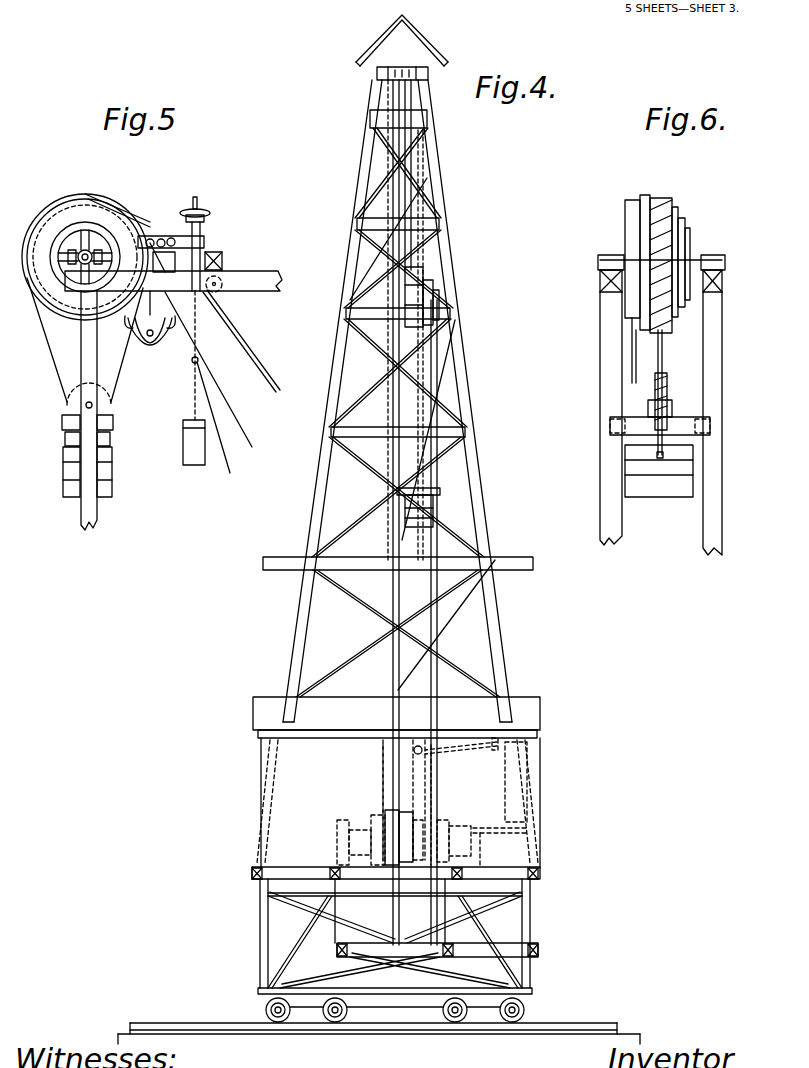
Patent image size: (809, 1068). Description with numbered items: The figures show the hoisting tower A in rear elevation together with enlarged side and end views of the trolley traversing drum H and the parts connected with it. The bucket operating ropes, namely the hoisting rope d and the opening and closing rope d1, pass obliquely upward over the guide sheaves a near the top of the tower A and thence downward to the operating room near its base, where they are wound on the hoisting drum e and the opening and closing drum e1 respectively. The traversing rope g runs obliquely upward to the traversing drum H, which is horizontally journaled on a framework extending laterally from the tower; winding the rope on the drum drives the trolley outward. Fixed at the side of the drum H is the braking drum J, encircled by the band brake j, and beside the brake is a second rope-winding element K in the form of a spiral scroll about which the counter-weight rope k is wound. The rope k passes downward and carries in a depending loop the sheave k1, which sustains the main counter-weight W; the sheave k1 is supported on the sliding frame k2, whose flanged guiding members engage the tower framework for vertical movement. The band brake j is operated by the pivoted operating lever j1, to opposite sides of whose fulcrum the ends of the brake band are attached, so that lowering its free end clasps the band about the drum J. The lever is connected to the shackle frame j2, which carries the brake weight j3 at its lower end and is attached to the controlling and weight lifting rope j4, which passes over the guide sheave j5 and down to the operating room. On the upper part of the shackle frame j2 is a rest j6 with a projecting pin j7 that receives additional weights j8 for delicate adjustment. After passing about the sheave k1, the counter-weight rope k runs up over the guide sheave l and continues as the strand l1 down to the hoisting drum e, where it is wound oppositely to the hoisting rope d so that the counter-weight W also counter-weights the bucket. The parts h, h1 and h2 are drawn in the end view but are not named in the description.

In FIG. 4, the guide sheaves a is at (388, 80).
In FIG. 4, the hoisting tower A is at (481, 470).
In FIG. 4, the trolley traversing drum H is at (397, 291).
In FIG. 6, the trolley traversing drum H is at (627, 211).
In FIG. 4, the counter-weight rope k is at (422, 417).
In FIG. 5, the counter-weight rope k is at (52, 366).
In FIG. 4, the main counter-weight W is at (433, 517).
In FIG. 5, the main counter-weight W is at (113, 473).
In FIG. 6, the main counter-weight W is at (653, 495).
In FIG. 4, the hoist-counter-weight rope strand l1 is at (432, 622).
In FIG. 5, the hoist-counter-weight rope strand l1 is at (233, 477).
In FIG. 4, the controlling and weight lifting rope j4 is at (455, 742).
In FIG. 5, the controlling and weight lifting rope j4 is at (204, 299).
In FIG. 4, the opening and closing rope d1 is at (382, 768).
In FIG. 4, the hoisting rope d is at (438, 780).
In FIG. 4, the opening and closing drum e1 is at (363, 822).
In FIG. 4, the hoisting drum e is at (446, 825).
In FIG. 5, the second rope-winding element K is at (55, 228).
In FIG. 6, the second rope-winding element K is at (680, 222).
In FIG. 5, the braking drum J is at (70, 196).
In FIG. 6, the braking drum J is at (657, 200).
In FIG. 5, the band brake j is at (137, 215).
In FIG. 6, the band brake j is at (650, 193).
In FIG. 5, the additional weights j8 is at (186, 218).
In FIG. 5, the pin j7 is at (198, 206).
In FIG. 5, the rest j6 is at (200, 218).
In FIG. 5, the pivoted operating lever j1 is at (177, 238).
In FIG. 5, the shackle frame j2 is at (200, 252).
In FIG. 5, the guide sheave j5 is at (222, 280).
In FIG. 5, the brake weight j3 is at (190, 445).
In FIG. 5, the sheave k1 is at (100, 392).
In FIG. 5, the sliding frame k2 is at (62, 425).
In FIG. 5, the guide sheave l is at (152, 348).
In FIG. 5, the traversing rope g is at (238, 427).
In FIG. 6, the traversing rope g is at (641, 350).
In FIG. 6, the rod h is at (662, 362).
In FIG. 6, the threaded rod h1 is at (667, 393).
In FIG. 6, the cross bar h2 is at (710, 425).